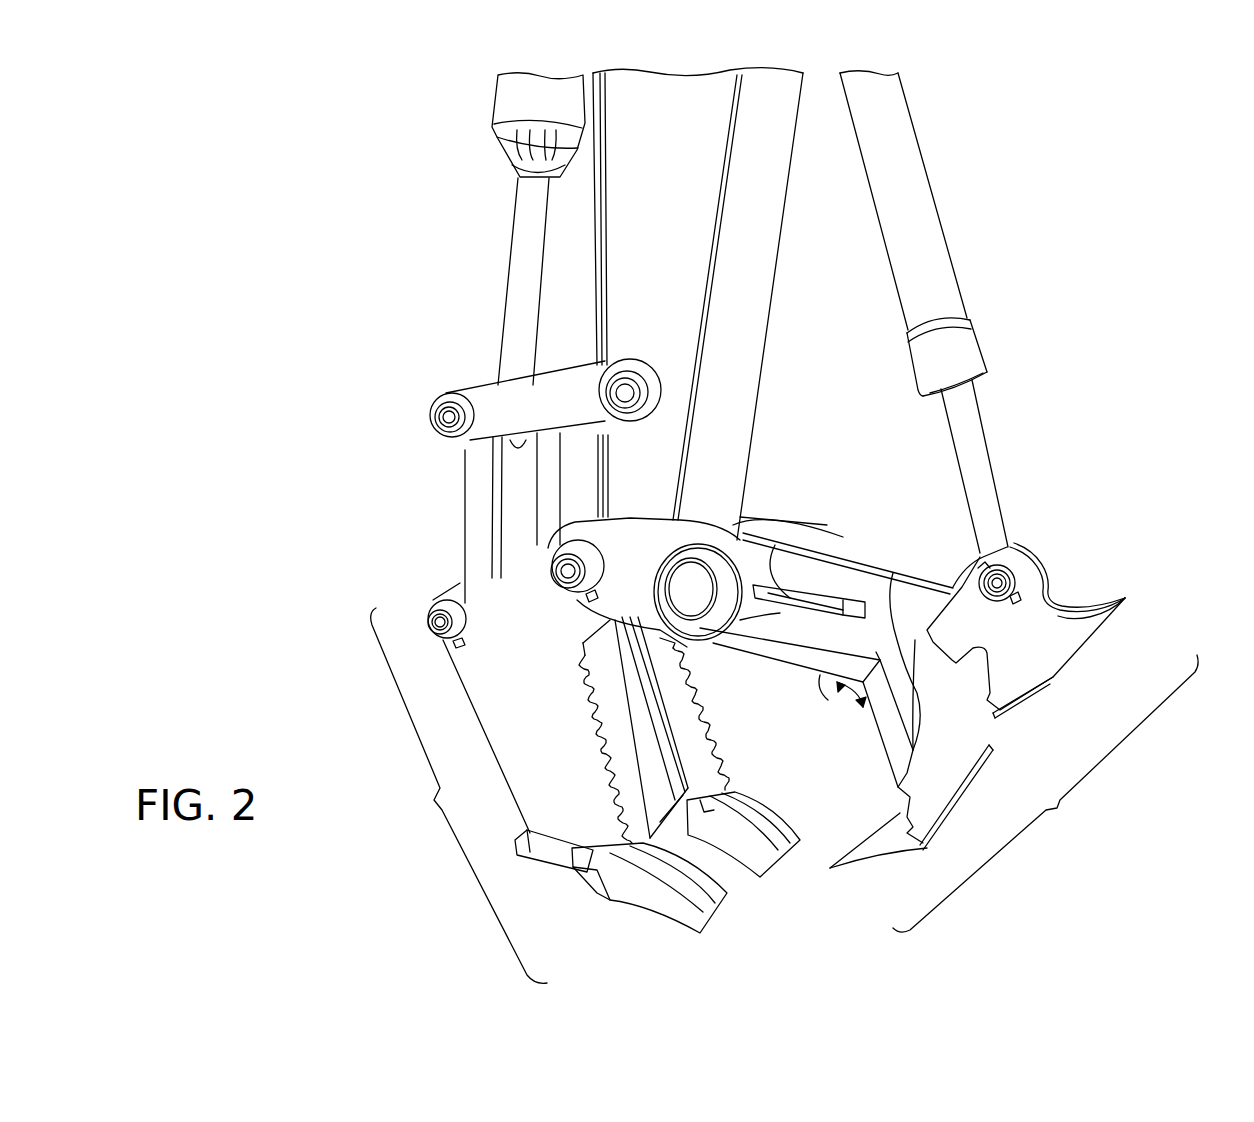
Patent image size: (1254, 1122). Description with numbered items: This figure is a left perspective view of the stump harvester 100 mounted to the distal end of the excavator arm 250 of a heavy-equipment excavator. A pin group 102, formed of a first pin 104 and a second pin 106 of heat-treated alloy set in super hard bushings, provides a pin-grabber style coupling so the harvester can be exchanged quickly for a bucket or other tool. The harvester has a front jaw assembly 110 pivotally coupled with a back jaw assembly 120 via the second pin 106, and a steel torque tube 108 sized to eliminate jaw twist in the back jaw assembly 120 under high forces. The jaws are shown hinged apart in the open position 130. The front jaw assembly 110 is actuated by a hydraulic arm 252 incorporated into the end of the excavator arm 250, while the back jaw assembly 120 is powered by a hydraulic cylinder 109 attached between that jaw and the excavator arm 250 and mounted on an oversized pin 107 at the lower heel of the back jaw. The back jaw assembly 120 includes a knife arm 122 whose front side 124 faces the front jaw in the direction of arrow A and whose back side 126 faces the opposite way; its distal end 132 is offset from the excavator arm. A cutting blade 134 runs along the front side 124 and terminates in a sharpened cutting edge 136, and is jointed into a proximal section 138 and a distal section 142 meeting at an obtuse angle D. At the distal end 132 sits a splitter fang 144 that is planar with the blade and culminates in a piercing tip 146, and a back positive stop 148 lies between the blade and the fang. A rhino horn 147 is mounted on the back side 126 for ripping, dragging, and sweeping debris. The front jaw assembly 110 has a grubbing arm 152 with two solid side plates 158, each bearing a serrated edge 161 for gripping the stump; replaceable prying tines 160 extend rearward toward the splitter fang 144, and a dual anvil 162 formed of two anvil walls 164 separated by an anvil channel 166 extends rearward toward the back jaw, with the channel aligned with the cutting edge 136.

The stump harvester 100 is at (420, 884).
The pin group 102 is at (553, 553).
The first pin 104 is at (433, 622).
The second pin 106 is at (566, 572).
The oversized pin 107 is at (997, 583).
The torque tube 108 is at (690, 575).
The hydraulic cylinder 109 is at (921, 232).
The front jaw assembly 110 is at (459, 795).
The back jaw assembly 120 is at (1014, 739).
The knife arm 122 is at (907, 703).
The front side 124 is at (843, 732).
The back side 126 is at (867, 533).
The open position 130 is at (668, 790).
The distal end 132 is at (973, 772).
The cutting blade 134 is at (748, 640).
The cutting edge 136 is at (839, 700).
The proximal section 138 is at (797, 652).
The distal section 142 is at (887, 737).
The splitter fang 144 is at (873, 847).
The piercing tip 146 is at (833, 867).
The rhino horn 147 is at (1058, 618).
The back positive stop 148 is at (898, 787).
The grubbing arm 152 is at (485, 703).
The side plates 158 is at (561, 742).
The prying tines 160 is at (640, 903).
The serrated edge 161 is at (620, 762).
The dual anvil 162 is at (642, 745).
The anvil walls 164 is at (665, 784).
The anvil channel 166 is at (662, 715).
The excavator arm 250 is at (767, 207).
The hydraulic arm 252 is at (505, 108).